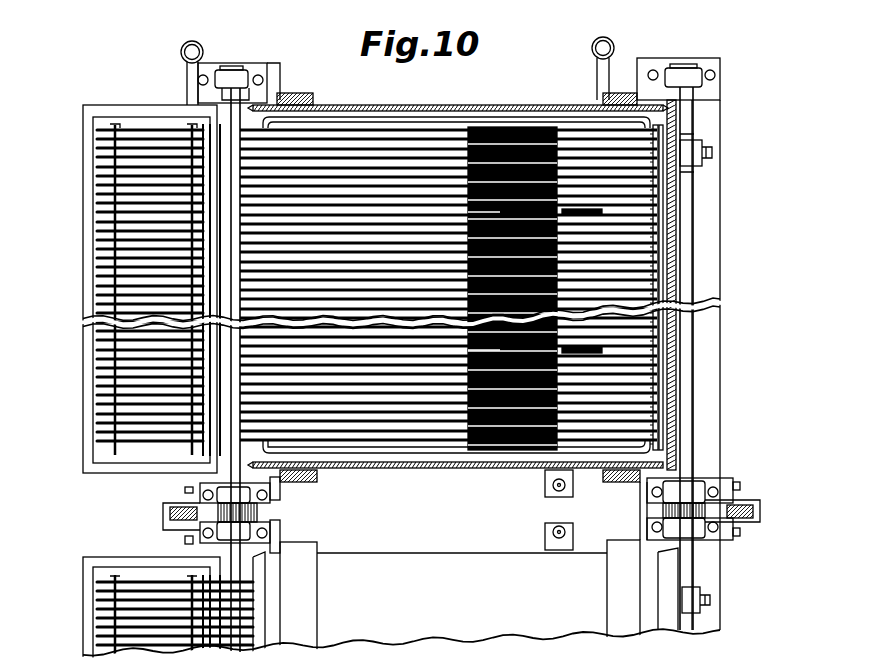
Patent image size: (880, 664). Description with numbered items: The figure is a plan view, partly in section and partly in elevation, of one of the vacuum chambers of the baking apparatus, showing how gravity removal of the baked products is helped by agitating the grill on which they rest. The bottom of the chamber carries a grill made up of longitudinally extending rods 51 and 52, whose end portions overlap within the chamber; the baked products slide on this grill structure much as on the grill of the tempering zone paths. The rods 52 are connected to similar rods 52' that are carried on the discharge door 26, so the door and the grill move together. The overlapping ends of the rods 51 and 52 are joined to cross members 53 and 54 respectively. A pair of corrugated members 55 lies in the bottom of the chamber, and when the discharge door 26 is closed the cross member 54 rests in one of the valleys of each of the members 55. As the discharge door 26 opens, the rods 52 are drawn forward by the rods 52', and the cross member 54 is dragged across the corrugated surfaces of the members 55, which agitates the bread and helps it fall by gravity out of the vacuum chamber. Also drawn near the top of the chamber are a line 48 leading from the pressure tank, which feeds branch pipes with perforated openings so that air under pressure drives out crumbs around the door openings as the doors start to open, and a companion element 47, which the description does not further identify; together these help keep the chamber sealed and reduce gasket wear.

The discharge door 26 is at (83, 130).
The adjusting knob 47 is at (592, 48).
The line 48 is at (203, 52).
The longitudinally extending rods 51 is at (572, 122).
The longitudinally extending rods 52 is at (448, 261).
The rods carried on the discharge door 52' is at (175, 371).
The cross member 53 is at (470, 130).
The cross member 54 is at (545, 130).
The corrugated members 55 is at (660, 213).